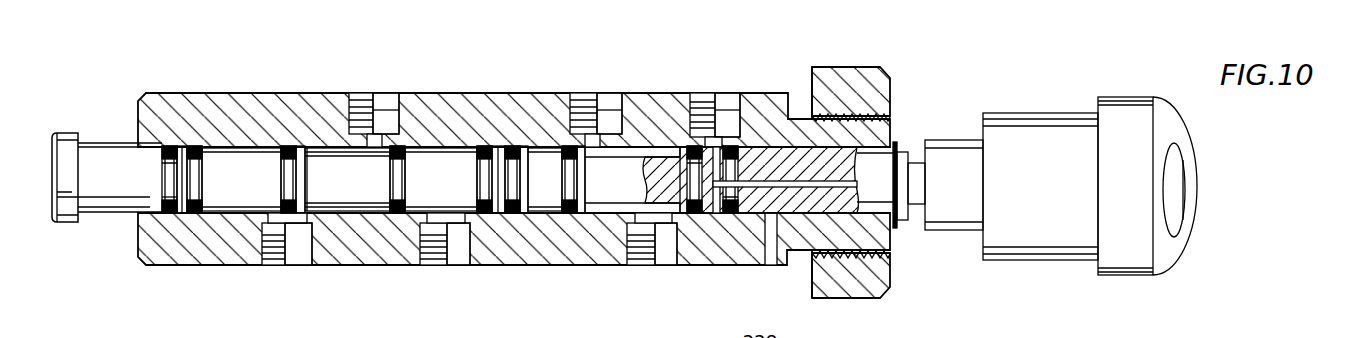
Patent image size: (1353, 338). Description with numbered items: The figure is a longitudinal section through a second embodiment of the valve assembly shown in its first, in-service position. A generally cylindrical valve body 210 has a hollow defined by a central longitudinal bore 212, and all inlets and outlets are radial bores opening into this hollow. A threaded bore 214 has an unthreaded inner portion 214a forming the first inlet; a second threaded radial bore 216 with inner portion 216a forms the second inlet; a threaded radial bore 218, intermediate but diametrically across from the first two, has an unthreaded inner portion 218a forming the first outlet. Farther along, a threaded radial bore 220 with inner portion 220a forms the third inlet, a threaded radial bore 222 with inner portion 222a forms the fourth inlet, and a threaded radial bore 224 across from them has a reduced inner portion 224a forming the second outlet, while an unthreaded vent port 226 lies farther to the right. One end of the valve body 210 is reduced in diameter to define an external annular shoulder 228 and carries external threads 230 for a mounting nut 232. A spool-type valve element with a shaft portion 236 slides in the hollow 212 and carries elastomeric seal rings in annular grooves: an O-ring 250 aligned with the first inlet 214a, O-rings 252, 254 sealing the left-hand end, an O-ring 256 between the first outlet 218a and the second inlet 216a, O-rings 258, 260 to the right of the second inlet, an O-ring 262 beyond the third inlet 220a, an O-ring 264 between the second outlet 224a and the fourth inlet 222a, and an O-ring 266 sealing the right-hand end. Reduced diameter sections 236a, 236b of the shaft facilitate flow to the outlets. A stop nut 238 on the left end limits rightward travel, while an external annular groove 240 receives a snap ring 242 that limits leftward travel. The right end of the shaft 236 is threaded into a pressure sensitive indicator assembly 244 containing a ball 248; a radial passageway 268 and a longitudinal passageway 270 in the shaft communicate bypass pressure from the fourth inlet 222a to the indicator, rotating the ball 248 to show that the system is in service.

The valve body 210 is at (598, 268).
The central longitudinal bore 212 is at (225, 148).
The threaded bore 214 is at (278, 258).
The first inlet 214a is at (312, 225).
The second threaded radial bore 216 is at (432, 254).
The second inlet 216a is at (468, 225).
The threaded radial bore 218 is at (392, 110).
The first outlet 218a is at (377, 134).
The threaded radial bore 220 is at (616, 150).
The third inlet 220a is at (598, 120).
The threaded radial bore 222 is at (738, 103).
The fourth inlet 222a is at (722, 143).
The threaded radial bore 224 is at (638, 250).
The second outlet 224a is at (668, 216).
The vent port 226 is at (768, 267).
The external annular shoulder 228 is at (792, 120).
The external threads 230 is at (873, 258).
The mounting nut 232 is at (880, 78).
The shaft portion 236 is at (105, 198).
The reduced diameter section 236a is at (337, 150).
The reduced diameter section 236b is at (650, 148).
The stop nut 238 is at (65, 130).
The external annular groove 240 is at (897, 147).
The snap ring 242 is at (895, 220).
The assembly 244 is at (1063, 266).
The ball 248 is at (1192, 178).
The O-ring 250 is at (290, 145).
The O-ring 252 is at (170, 213).
The O-ring 254 is at (190, 145).
The O-ring 256 is at (483, 147).
The O-ring 258 is at (512, 147).
The O-ring 260 is at (568, 147).
The O-ring 262 is at (568, 213).
The O-ring 264 is at (685, 147).
The O-ring 266 is at (732, 217).
The radial passageway 268 is at (717, 175).
The longitudinal passageway 270 is at (813, 187).